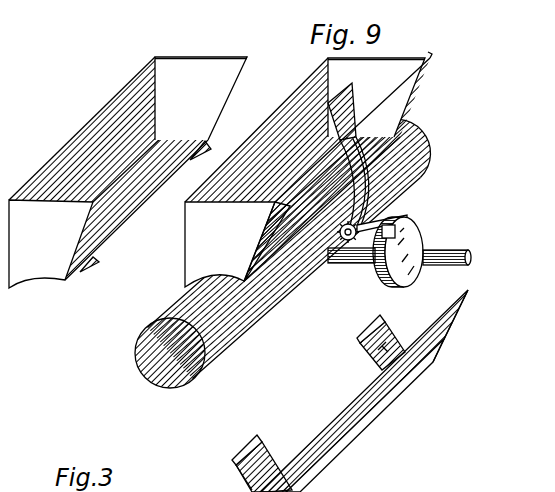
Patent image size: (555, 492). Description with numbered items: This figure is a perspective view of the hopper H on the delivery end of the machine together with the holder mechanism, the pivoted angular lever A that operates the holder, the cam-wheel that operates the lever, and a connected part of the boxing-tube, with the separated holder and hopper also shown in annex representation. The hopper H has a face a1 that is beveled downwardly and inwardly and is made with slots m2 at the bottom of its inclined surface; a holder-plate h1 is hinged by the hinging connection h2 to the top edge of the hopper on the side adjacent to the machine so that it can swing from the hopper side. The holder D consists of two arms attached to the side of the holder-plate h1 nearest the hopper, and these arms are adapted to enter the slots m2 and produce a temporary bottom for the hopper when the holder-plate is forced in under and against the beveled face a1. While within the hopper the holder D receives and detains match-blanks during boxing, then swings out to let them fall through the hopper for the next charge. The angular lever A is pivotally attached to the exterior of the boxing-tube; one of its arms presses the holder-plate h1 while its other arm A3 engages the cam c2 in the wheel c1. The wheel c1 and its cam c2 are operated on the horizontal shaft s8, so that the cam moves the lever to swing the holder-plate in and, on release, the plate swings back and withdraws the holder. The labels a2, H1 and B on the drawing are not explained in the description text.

The hopper H is at (220, 249).
The face of the hopper a1 is at (156, 168).
The end plate of trough a2 is at (51, 252).
The slots m2 is at (148, 208).
The drum cylinder H1 is at (282, 253).
The hinging connection h2 is at (431, 57).
The curved blade B is at (349, 155).
The angular lever A is at (342, 242).
The arm of the angular lever A3 is at (398, 212).
The wheel c1 is at (372, 277).
The cam c2 is at (428, 212).
The horizontal shaft s8 is at (447, 253).
The holder-plate h1 is at (364, 331).
The holder D is at (262, 443).